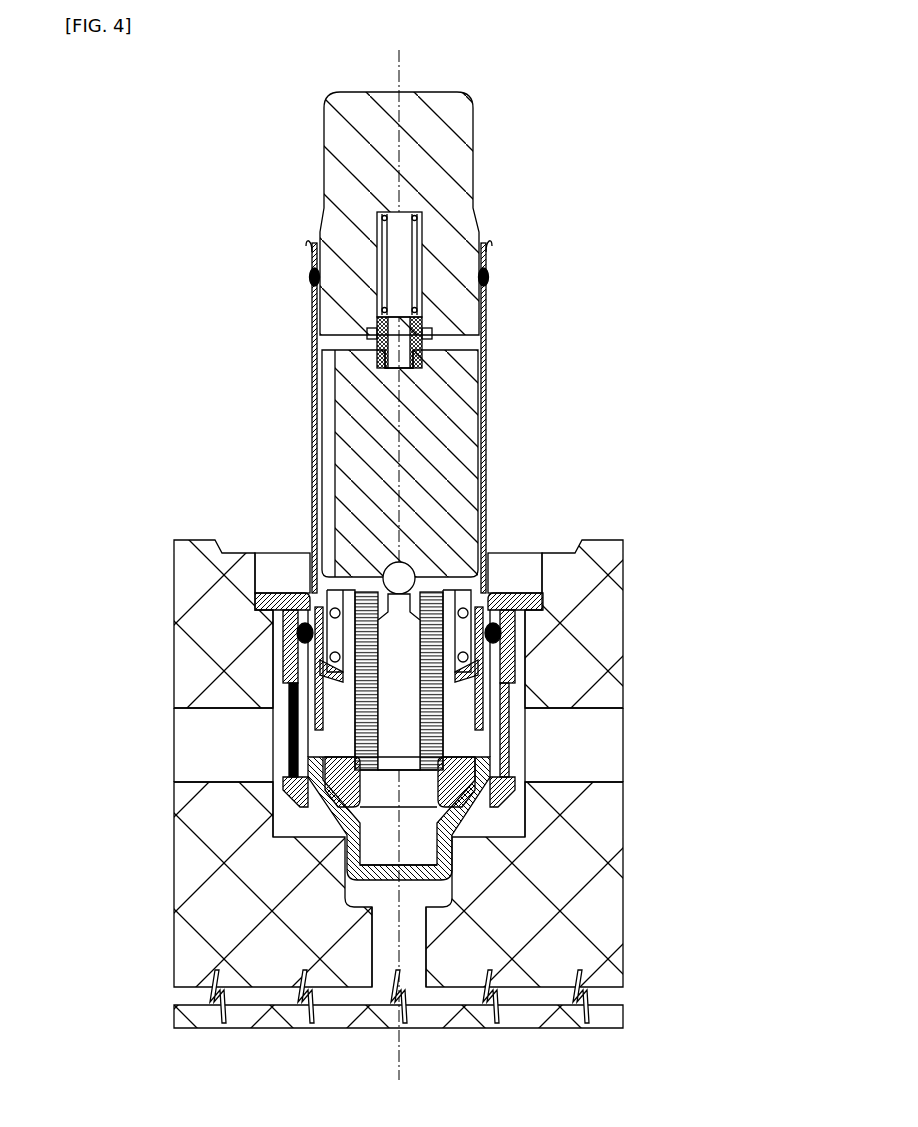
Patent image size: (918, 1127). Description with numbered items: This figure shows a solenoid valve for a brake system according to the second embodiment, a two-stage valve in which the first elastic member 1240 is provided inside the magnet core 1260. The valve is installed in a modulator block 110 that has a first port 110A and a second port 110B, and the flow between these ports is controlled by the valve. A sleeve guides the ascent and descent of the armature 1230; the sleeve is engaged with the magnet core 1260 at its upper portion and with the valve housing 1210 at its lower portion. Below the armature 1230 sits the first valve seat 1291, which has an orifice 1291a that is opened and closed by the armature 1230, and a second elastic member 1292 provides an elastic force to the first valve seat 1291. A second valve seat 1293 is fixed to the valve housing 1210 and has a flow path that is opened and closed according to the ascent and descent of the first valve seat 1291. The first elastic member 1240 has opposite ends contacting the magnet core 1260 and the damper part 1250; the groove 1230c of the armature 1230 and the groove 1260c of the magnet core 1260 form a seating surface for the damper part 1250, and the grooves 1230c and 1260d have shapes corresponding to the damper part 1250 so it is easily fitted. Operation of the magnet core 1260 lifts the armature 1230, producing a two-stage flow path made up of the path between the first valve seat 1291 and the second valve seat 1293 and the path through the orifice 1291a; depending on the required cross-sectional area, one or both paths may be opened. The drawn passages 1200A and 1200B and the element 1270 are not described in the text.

The modulator block 110 is at (610, 600).
The first port 110A is at (216, 750).
The second port 110B is at (416, 948).
The first flow path 1200A is at (313, 737).
The second flow path 1200B is at (385, 878).
The valve housing 1210 is at (466, 812).
The armature 1230 is at (396, 463).
The groove of the armature 1230c is at (380, 357).
The first elastic member 1240 is at (383, 310).
The damper part 1250 is at (418, 358).
The magnet core 1260 is at (388, 226).
The groove of the magnet core 1260c is at (384, 230).
The groove 1260d is at (372, 337).
The valve seat body 1270 is at (285, 648).
The first valve seat 1291 is at (370, 585).
The orifice 1291a is at (408, 603).
The second elastic member 1292 is at (338, 648).
The second valve seat 1293 is at (338, 787).